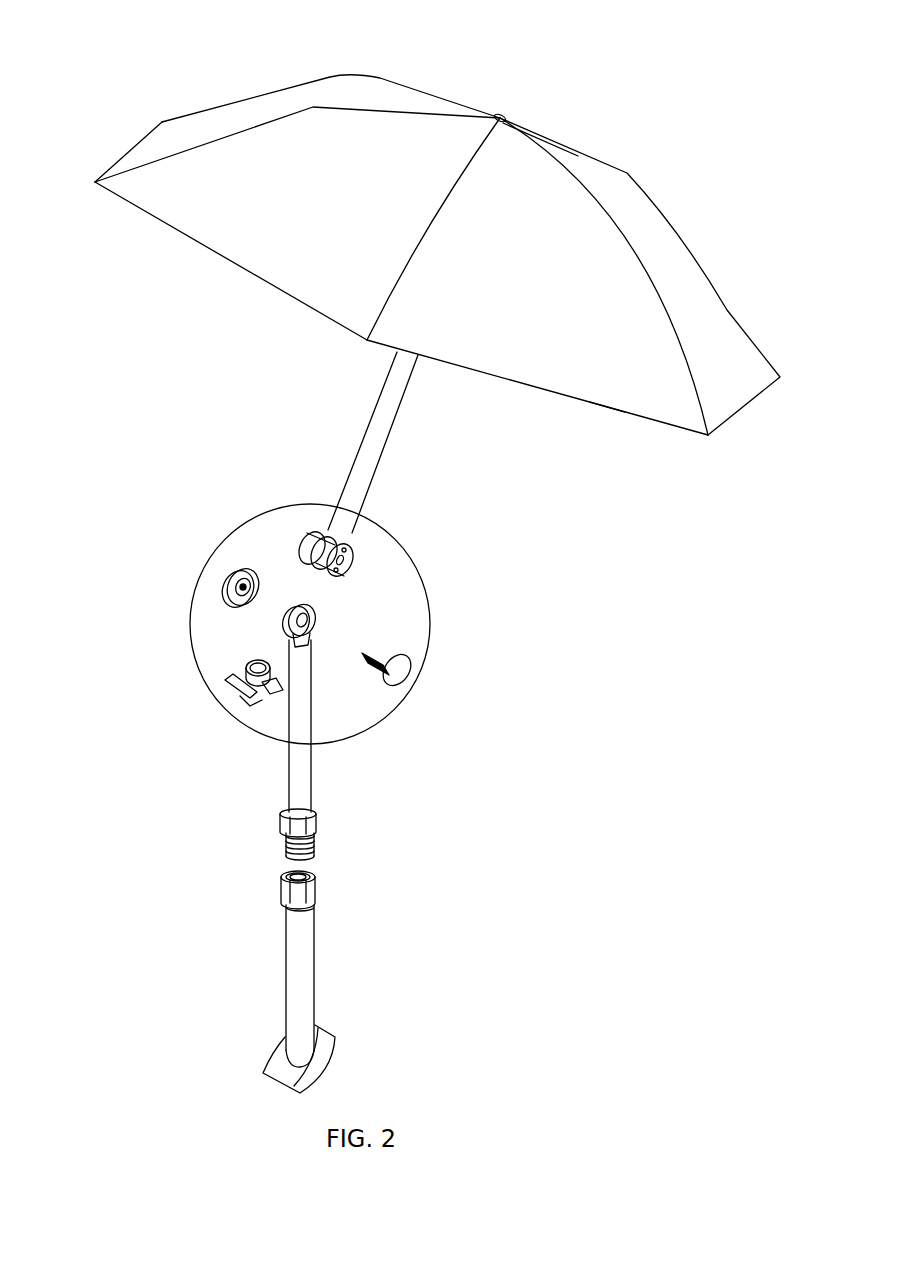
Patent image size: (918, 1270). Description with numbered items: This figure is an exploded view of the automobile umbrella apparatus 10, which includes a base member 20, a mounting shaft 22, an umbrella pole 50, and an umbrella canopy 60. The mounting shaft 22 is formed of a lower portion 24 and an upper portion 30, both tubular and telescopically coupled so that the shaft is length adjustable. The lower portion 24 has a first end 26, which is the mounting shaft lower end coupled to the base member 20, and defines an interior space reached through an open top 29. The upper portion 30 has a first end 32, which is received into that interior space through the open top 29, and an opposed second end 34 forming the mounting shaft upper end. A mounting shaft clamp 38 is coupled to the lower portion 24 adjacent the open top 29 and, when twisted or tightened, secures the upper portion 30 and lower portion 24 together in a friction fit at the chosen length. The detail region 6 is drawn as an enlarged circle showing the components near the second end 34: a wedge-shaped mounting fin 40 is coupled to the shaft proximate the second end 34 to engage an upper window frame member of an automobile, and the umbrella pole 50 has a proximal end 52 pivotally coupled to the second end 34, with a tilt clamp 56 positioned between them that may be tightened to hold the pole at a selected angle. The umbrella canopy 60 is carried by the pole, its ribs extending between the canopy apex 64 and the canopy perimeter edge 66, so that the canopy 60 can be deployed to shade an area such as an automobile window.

The automobile umbrella apparatus 10 is at (128, 72).
The umbrella canopy 60 is at (633, 170).
The canopy apex 64 is at (493, 130).
The canopy perimeter edge 66 is at (607, 407).
The umbrella pole 50 is at (353, 438).
The proximal end 52 is at (347, 527).
The hub assembly detail 6 is at (430, 627).
The tilt clamp 56 is at (298, 537).
The second end 34 is at (317, 610).
The upper portion 30 is at (318, 707).
The mounting fin 40 is at (218, 683).
The mounting shaft 22 is at (250, 849).
The first end 32 is at (313, 853).
The open top 29 is at (285, 862).
The mounting shaft clamp 38 is at (315, 905).
The lower portion 24 is at (325, 997).
The first end 26 is at (290, 1046).
The base member 20 is at (318, 1067).